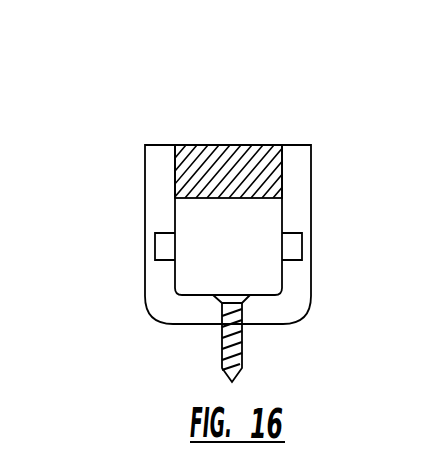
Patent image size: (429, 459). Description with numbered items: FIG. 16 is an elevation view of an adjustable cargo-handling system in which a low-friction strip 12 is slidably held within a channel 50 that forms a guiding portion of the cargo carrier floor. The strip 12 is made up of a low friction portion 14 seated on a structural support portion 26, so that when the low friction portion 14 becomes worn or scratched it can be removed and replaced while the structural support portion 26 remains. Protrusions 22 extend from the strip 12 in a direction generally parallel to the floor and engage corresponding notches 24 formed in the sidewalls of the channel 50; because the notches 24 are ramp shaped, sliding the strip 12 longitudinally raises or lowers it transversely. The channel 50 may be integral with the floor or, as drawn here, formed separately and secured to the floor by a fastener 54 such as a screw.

The strip 12 is at (283, 208).
The low friction portion 14 is at (222, 143).
The protrusions 22 is at (165, 250).
The notches 24 is at (167, 233).
The structural support portion 26 is at (238, 263).
The channel 50 is at (132, 148).
The fasteners 54 is at (243, 353).